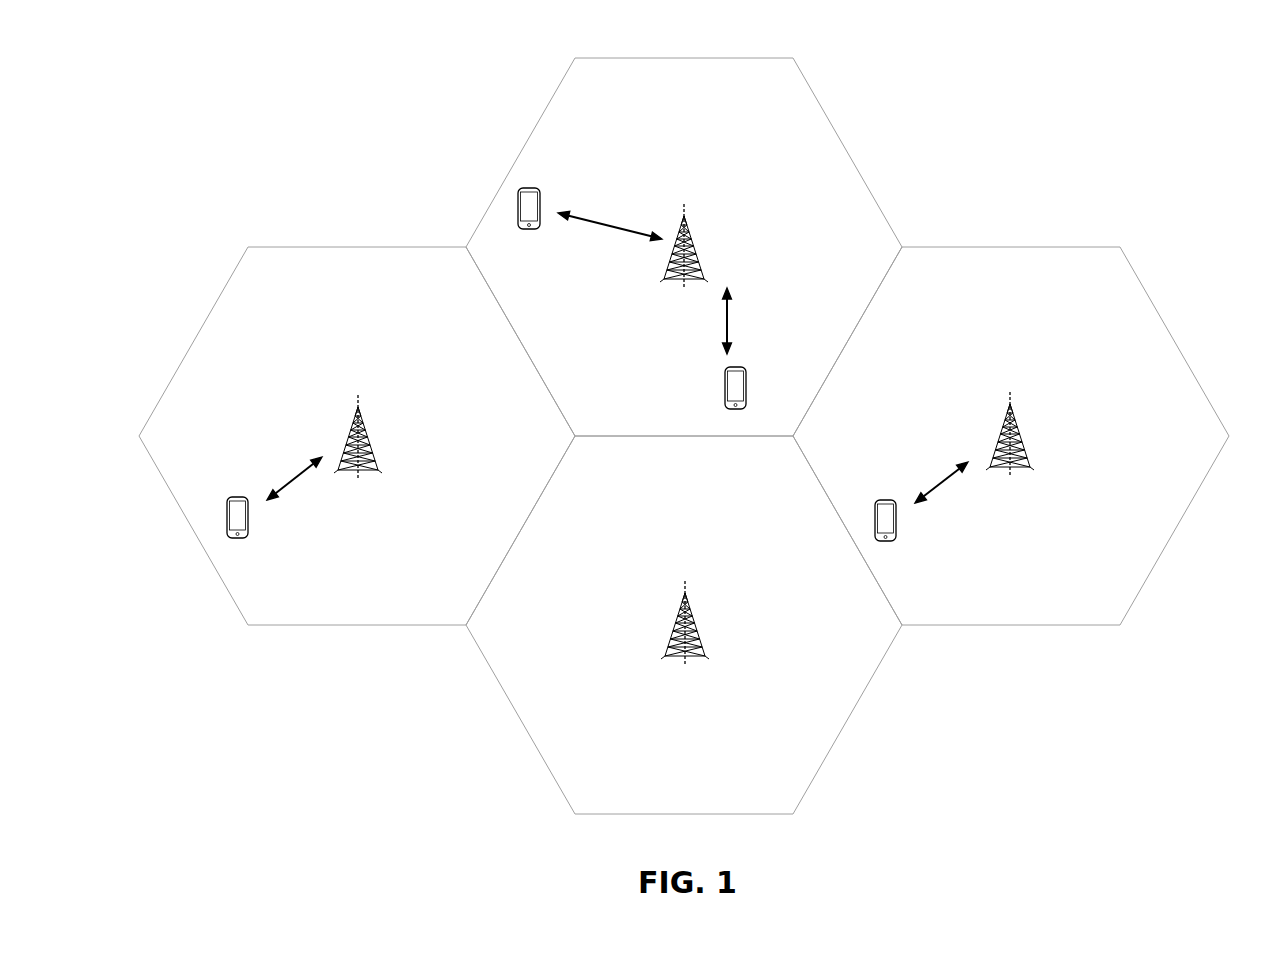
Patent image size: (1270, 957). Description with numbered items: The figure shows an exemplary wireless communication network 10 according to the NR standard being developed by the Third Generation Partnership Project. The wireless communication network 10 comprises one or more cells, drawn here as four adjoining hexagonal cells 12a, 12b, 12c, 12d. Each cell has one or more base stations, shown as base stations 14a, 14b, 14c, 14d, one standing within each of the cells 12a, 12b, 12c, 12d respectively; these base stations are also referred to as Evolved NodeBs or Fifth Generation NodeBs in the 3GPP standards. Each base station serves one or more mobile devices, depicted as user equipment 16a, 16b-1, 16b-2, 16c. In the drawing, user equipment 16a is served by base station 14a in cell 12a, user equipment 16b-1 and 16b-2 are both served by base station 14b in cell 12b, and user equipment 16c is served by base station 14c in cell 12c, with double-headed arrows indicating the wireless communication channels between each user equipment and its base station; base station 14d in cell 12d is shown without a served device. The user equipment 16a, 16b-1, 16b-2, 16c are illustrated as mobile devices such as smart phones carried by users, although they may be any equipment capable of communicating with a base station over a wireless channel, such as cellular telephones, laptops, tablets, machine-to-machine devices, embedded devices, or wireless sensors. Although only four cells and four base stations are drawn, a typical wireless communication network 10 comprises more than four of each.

The wireless communication network 10 is at (1170, 52).
The cell 12a is at (1080, 247).
The cell 12b is at (843, 145).
The cell 12c is at (350, 247).
The cell 12d is at (513, 705).
The base station 14a is at (1015, 430).
The base station 14b is at (690, 235).
The base station 14c is at (363, 425).
The base station 14d is at (690, 618).
The user equipment 16a is at (896, 520).
The user equipment 16b-1 is at (745, 383).
The user equipment 16b-2 is at (518, 210).
The user equipment 16c is at (227, 523).